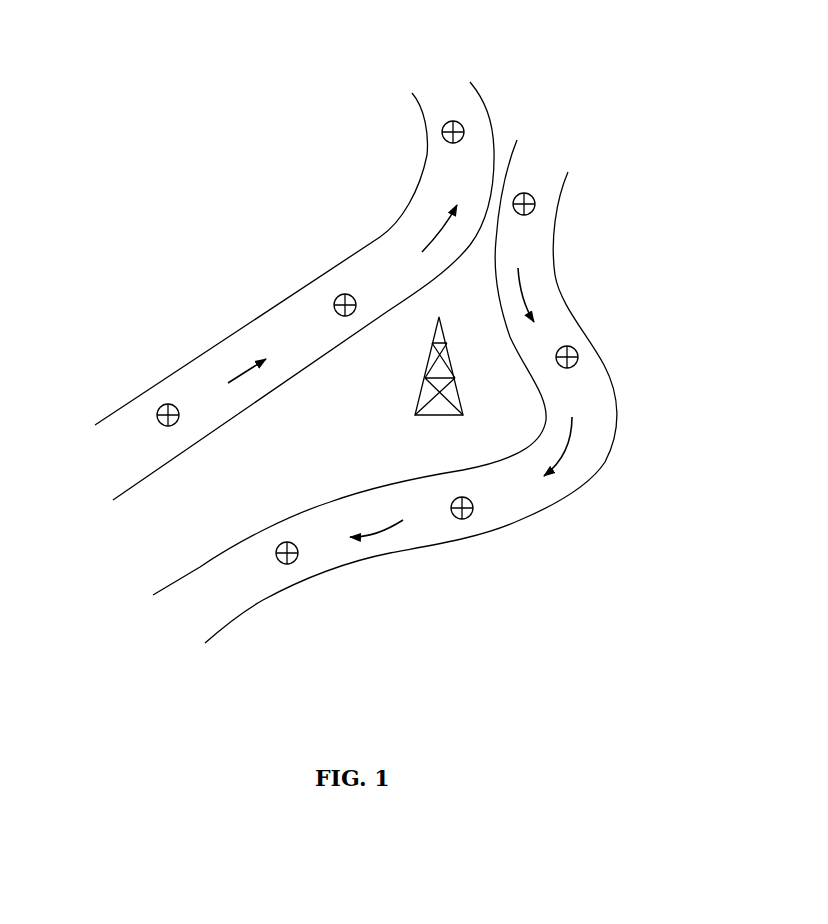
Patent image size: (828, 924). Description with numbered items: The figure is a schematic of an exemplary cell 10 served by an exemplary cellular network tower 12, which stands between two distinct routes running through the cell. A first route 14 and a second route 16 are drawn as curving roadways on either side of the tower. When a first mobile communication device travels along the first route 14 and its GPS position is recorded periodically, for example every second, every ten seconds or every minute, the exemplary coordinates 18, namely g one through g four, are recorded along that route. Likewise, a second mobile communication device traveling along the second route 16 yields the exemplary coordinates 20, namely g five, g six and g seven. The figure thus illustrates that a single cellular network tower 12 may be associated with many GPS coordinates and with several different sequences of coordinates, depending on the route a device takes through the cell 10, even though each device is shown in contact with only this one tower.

The cell 10 is at (160, 170).
The cellular network tower 12 is at (412, 375).
The first route 14 is at (568, 133).
The second route 16 is at (418, 66).
The GPS coordinates of first route 18 is at (560, 190).
The GPS coordinates of second route 20 is at (438, 133).